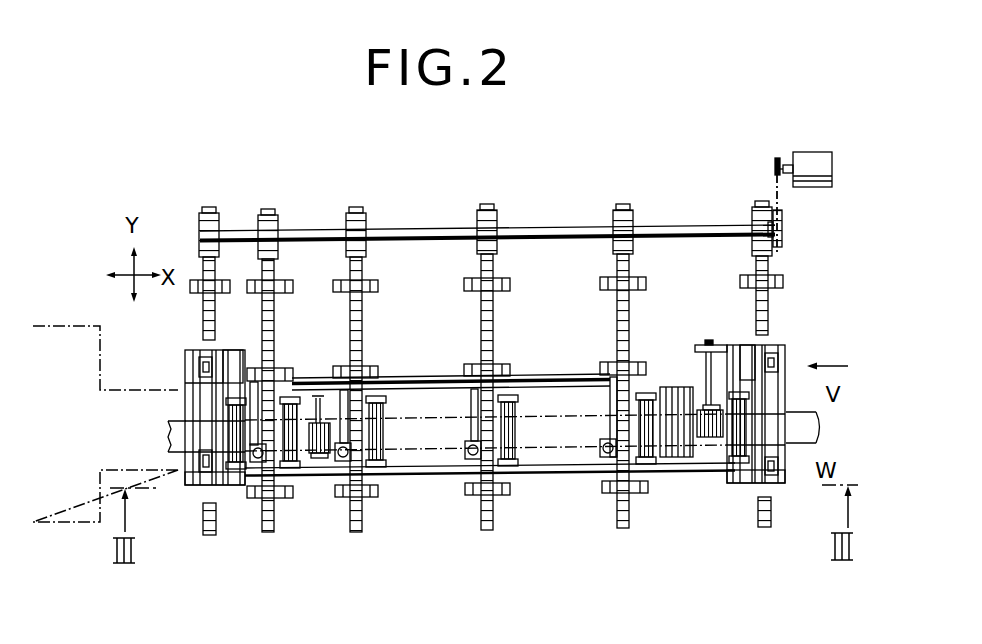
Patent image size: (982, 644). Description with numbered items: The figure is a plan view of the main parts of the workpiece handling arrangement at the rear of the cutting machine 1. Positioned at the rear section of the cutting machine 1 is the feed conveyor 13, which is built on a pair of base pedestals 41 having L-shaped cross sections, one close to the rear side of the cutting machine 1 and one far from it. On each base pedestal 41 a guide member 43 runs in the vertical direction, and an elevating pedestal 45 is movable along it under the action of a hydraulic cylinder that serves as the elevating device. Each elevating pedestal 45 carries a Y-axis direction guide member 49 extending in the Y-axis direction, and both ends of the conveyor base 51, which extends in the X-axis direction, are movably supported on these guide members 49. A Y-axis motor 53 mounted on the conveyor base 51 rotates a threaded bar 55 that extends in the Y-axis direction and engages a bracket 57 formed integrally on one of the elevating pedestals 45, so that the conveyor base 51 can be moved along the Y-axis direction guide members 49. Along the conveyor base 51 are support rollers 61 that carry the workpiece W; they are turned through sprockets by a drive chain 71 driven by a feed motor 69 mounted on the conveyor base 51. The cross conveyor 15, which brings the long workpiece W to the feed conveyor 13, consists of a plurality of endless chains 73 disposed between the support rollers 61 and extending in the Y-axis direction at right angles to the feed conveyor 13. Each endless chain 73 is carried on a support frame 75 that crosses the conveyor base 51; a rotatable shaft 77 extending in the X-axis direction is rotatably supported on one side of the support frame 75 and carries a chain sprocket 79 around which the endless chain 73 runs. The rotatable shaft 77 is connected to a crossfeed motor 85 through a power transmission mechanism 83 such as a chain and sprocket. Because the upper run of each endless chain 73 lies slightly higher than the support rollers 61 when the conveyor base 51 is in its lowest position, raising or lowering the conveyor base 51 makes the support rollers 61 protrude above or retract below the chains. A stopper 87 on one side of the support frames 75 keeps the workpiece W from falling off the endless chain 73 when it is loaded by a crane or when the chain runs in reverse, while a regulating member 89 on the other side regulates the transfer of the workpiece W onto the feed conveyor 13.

The cutting machine 1 is at (82, 323).
The feed conveyor 13 is at (457, 478).
The cross conveyor 15 is at (497, 202).
The base pedestal 41 is at (188, 477).
The guide member 43 is at (194, 366).
The elevating pedestal 45 is at (247, 345).
The Y-axis direction guide member 49 is at (232, 348).
The conveyor base 51 is at (558, 393).
The Y-axis motor 53 is at (713, 472).
The threaded bar 55 is at (707, 372).
The bracket 57 is at (707, 345).
The support roller 61 is at (385, 447).
The feed motor 69 is at (320, 415).
The drive chain 71 is at (662, 472).
The endless chain 73 is at (206, 207).
The support frame 75 is at (617, 497).
The rotatable shaft 77 is at (302, 232).
The chain sprocket 79 is at (218, 222).
The power transmission mechanism 83 is at (784, 216).
The crossfeed motor 85 is at (813, 160).
The stopper 87 is at (463, 279).
The regulating member 89 is at (258, 498).